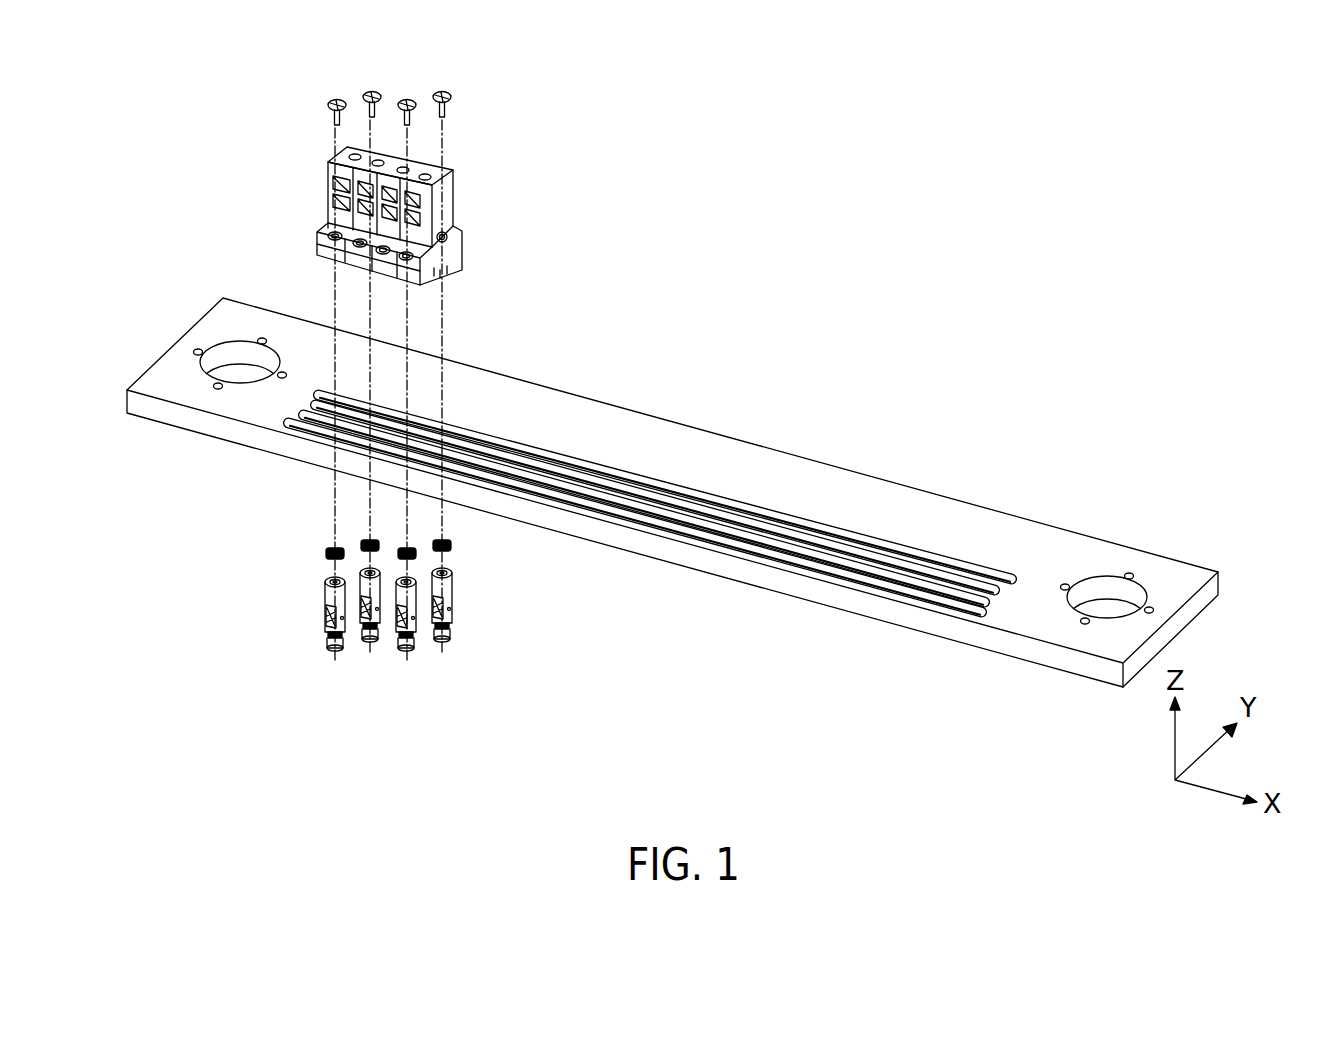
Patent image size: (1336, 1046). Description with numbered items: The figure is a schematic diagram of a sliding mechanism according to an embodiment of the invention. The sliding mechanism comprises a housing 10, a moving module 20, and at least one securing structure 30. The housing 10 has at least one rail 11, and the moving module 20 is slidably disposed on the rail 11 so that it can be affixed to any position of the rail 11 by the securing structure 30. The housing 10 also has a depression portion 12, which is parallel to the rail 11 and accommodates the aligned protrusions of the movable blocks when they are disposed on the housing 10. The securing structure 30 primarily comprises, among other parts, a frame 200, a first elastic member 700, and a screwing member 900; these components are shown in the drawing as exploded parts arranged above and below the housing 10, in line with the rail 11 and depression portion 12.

The housing 10 is at (1123, 548).
The rail 11 is at (975, 570).
The depression portion 12 is at (902, 580).
The moving module 20 is at (452, 169).
The securing structure 30 is at (447, 632).
The frame 200 is at (410, 602).
The first elastic member 700 is at (418, 555).
The screwing member 900 is at (365, 107).